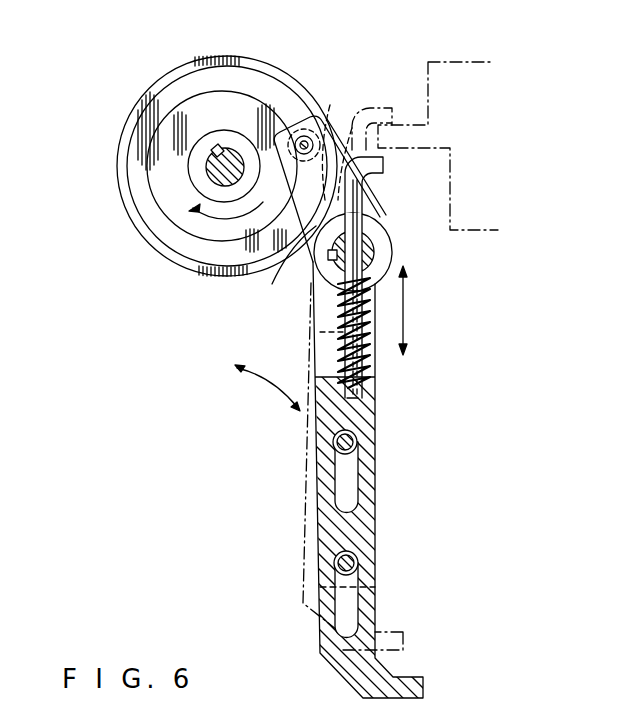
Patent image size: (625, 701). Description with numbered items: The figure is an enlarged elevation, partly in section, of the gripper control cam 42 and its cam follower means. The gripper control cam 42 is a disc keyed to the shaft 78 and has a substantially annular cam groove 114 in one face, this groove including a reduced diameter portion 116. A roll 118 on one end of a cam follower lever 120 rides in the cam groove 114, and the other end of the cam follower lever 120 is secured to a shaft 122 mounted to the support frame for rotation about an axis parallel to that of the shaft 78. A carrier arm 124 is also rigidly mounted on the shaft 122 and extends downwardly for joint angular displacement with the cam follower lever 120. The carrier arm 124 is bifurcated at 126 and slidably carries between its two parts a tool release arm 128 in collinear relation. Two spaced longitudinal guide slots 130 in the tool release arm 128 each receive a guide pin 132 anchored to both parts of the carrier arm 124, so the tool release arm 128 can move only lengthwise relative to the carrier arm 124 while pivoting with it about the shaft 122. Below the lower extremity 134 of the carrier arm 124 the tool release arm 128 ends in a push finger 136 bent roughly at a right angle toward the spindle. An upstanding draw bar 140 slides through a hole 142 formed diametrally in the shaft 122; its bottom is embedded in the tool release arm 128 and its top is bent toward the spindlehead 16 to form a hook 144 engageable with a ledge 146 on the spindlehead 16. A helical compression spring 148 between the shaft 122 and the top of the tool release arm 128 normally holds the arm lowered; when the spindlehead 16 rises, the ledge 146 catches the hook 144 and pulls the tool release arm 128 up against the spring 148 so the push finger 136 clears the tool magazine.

The spindlehead 16 is at (459, 68).
The gripper control cam 42 is at (203, 157).
The shaft 78 is at (232, 156).
The cam groove 114 is at (143, 143).
The reduced diameter portion 116 is at (285, 118).
The roll 118 is at (308, 130).
The cam follower lever 120 is at (283, 268).
The shaft 122 is at (376, 258).
The carrier arm 124 is at (320, 332).
The bifurcation 126 is at (330, 338).
The tool release arm 128 is at (325, 527).
The guide slots 130 is at (355, 478).
The guide pin 132 is at (338, 441).
The lower extremity 134 is at (340, 590).
The push finger 136 is at (413, 686).
The draw bar 140 is at (362, 224).
The hole 142 is at (320, 282).
The hook 144 is at (379, 174).
The ledge 146 is at (412, 123).
The helical compression spring 148 is at (368, 360).